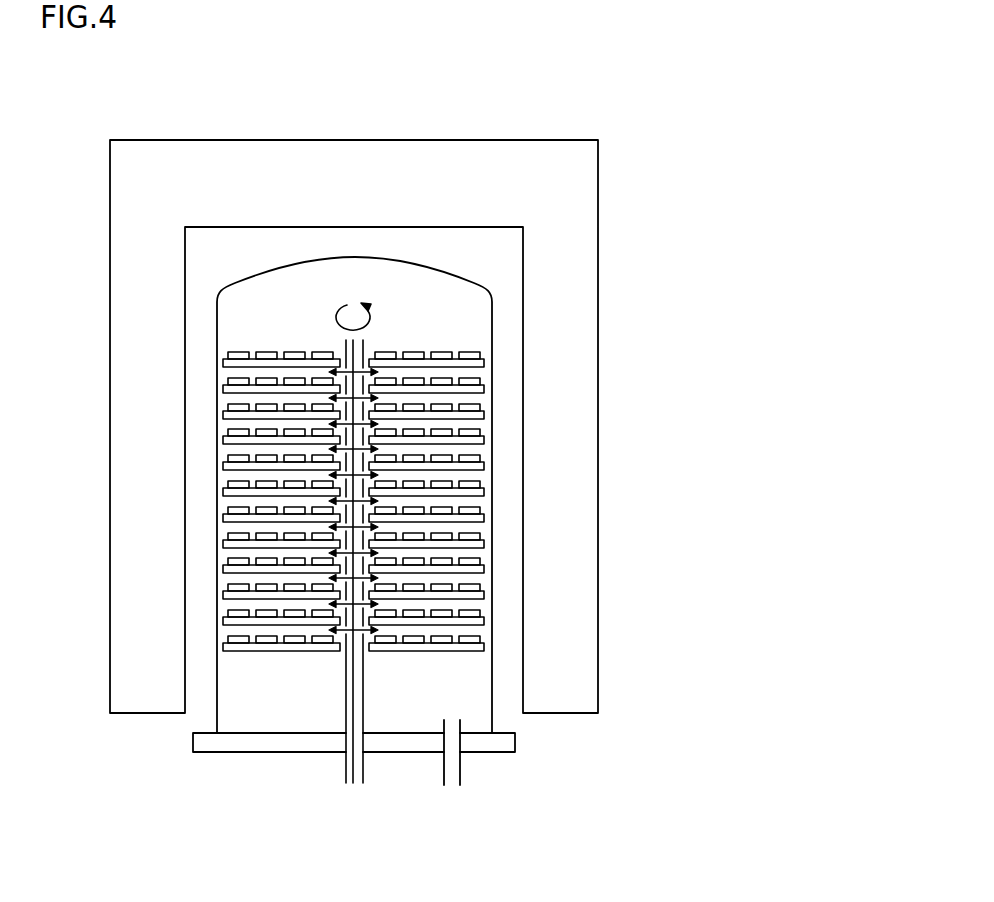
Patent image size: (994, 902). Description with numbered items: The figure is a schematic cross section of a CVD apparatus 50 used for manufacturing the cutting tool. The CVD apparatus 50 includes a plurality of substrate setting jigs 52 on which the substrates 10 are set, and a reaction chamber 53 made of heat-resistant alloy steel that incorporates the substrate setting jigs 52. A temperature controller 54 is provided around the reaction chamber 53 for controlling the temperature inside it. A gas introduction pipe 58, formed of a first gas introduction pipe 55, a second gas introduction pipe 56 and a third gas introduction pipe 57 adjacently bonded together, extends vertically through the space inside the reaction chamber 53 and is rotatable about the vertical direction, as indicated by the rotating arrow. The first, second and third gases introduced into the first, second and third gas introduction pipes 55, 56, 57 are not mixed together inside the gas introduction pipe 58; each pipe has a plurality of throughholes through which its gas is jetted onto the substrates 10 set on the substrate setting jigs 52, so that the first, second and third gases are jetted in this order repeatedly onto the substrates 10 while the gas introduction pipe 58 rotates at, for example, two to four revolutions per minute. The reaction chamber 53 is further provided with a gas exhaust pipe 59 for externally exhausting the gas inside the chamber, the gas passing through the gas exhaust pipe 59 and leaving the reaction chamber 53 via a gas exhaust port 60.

The CVD apparatus 50 is at (562, 105).
The temperature controller 54 is at (558, 178).
The reaction chamber 53 is at (470, 275).
The substrate setting jig 52 is at (473, 543).
The substrate 10 is at (467, 459).
The gas introduction pipe 58 is at (351, 456).
The first gas introduction pipe 55 is at (352, 778).
The second gas introduction pipe 56 is at (343, 765).
The third gas introduction pipe 57 is at (357, 778).
The gas exhaust pipe 59 is at (462, 722).
The gas exhaust port 60 is at (451, 778).